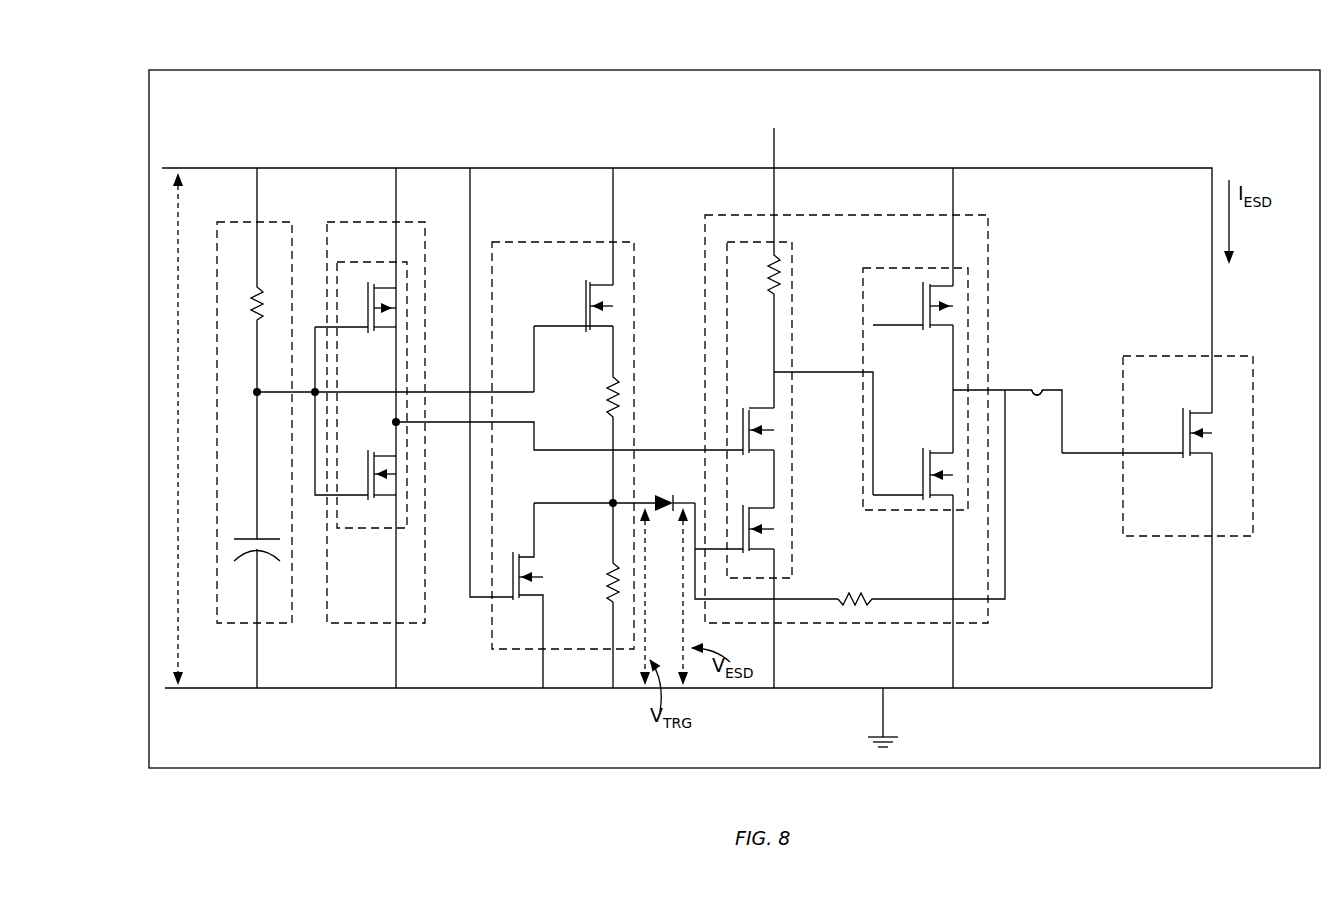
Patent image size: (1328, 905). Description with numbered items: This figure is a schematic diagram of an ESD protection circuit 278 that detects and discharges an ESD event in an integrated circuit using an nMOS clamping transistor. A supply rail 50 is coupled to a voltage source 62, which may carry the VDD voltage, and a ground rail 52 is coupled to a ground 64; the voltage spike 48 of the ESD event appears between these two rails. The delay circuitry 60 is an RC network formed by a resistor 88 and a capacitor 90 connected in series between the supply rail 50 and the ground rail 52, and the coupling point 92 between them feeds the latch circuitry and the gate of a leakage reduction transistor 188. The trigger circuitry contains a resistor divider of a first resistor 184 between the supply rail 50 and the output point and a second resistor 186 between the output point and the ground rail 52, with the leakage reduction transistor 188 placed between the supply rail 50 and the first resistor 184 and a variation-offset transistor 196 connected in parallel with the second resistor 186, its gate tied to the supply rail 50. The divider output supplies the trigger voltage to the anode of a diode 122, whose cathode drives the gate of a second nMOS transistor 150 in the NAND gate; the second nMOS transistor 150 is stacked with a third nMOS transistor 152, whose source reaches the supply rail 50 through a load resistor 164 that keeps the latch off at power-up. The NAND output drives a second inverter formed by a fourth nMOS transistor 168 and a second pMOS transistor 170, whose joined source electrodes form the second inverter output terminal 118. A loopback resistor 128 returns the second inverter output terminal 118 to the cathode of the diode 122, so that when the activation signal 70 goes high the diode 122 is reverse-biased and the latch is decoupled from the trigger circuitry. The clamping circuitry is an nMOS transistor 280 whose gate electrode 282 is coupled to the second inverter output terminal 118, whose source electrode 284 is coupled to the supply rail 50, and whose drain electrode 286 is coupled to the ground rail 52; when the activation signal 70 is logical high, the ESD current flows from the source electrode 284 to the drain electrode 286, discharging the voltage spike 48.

The ESD protection circuit 278 is at (1163, 70).
The supply rail 50 is at (226, 168).
The ground rail 52 is at (237, 690).
The voltage spike 48 is at (190, 228).
The delay circuitry 60 is at (272, 222).
The resistor 88 is at (257, 297).
The capacitor 90 is at (257, 539).
The coupling point 92 is at (252, 388).
The leakage reduction transistor 188 is at (602, 306).
The first resistor 184 is at (620, 410).
The second resistor 186 is at (603, 580).
The variation-offset transistor 196 is at (526, 577).
The diode 122 is at (660, 512).
The load resistor 164 is at (785, 275).
The third nMOS transistor 152 is at (762, 430).
The second nMOS transistor 150 is at (762, 529).
The second pMOS transistor 170 is at (948, 306).
The fourth nMOS transistor 168 is at (945, 475).
The loopback resistor 128 is at (850, 598).
The second inverter output terminal 118 is at (1010, 390).
The activation signal 70 is at (1037, 385).
The nMOS transistor gate electrode 282 is at (1085, 455).
The nMOS transistor 280 is at (1200, 433).
The nMOS transistor source electrode 284 is at (1200, 410).
The nMOS transistor drain electrode 286 is at (1200, 456).
The voltage source 62 is at (804, 118).
The ground 64 is at (906, 737).